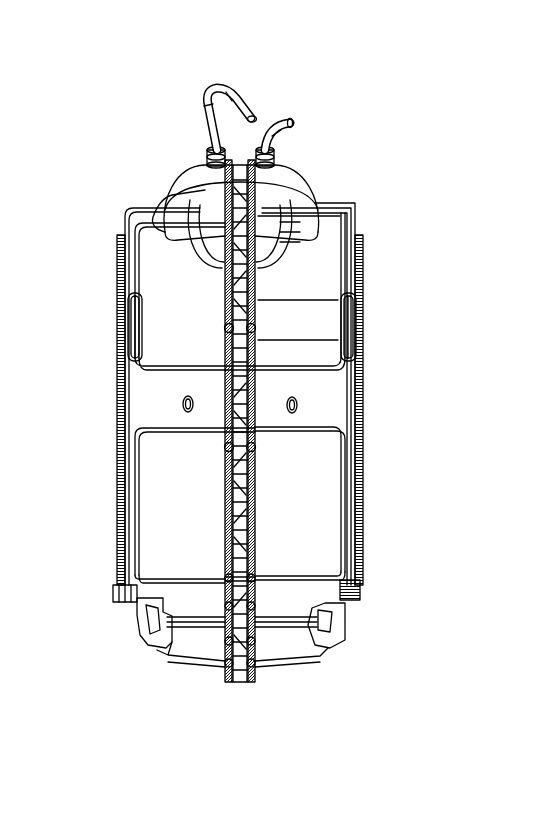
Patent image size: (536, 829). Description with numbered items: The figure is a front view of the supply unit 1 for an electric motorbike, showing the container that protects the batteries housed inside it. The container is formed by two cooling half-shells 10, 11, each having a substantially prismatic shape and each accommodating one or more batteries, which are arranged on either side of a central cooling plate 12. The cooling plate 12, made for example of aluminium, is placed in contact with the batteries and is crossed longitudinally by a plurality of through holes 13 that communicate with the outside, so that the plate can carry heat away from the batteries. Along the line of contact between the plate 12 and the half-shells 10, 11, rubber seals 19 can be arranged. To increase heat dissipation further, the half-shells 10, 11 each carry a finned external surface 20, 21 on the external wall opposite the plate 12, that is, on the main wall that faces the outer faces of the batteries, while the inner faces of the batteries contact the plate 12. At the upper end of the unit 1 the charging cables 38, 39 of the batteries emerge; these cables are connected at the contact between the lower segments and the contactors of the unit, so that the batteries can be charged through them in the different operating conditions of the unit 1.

The supply unit 1 is at (444, 133).
The cooling half-shell 10 is at (137, 208).
The cooling half-shell 11 is at (318, 268).
The cooling plate 12 is at (246, 140).
The through holes 13 is at (292, 236).
The rubber seals 19 is at (200, 183).
The finned external surface 20 is at (118, 455).
The finned external surface 21 is at (365, 293).
The charging cable 38 is at (293, 127).
The charging cable 39 is at (213, 93).